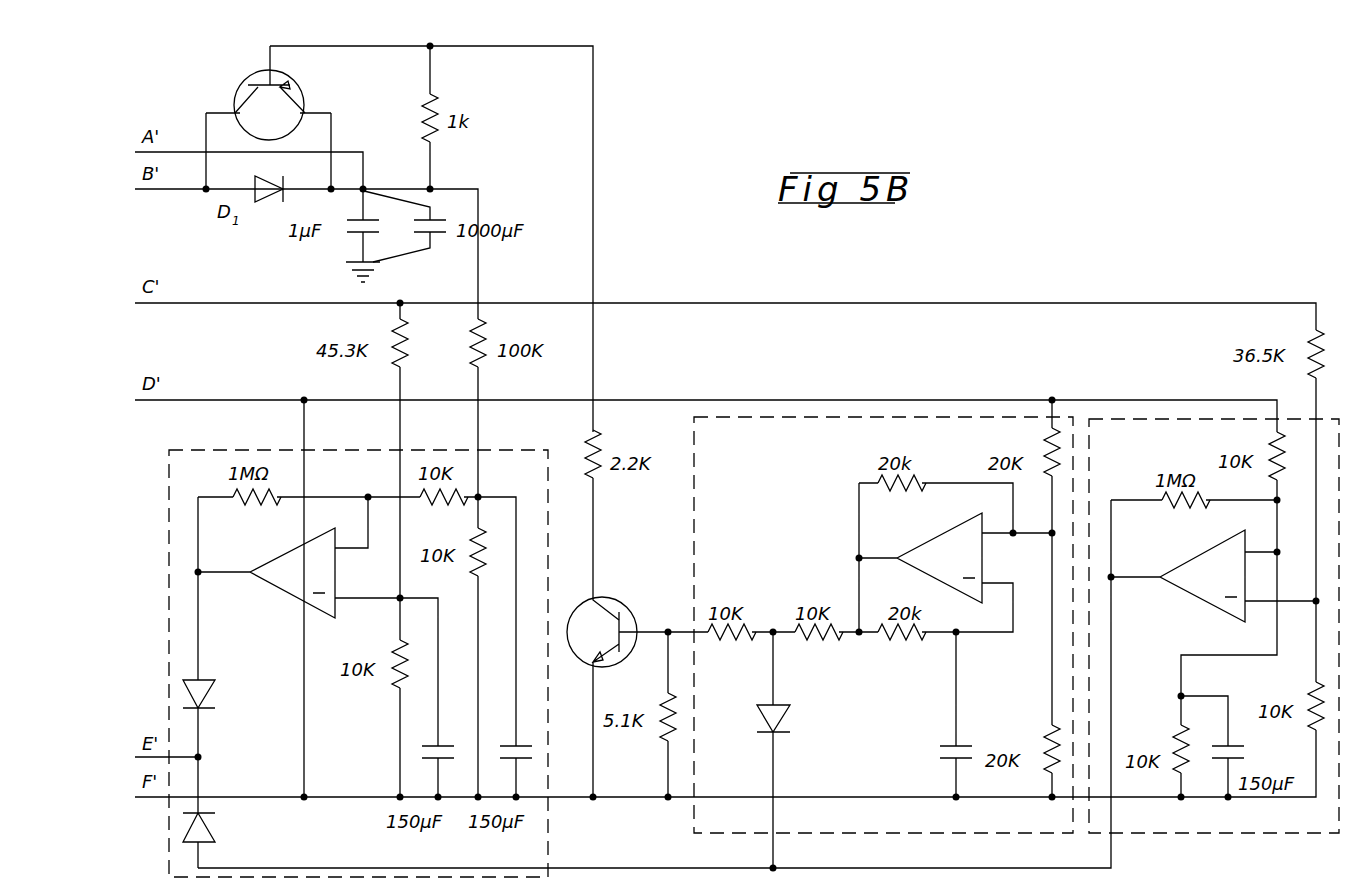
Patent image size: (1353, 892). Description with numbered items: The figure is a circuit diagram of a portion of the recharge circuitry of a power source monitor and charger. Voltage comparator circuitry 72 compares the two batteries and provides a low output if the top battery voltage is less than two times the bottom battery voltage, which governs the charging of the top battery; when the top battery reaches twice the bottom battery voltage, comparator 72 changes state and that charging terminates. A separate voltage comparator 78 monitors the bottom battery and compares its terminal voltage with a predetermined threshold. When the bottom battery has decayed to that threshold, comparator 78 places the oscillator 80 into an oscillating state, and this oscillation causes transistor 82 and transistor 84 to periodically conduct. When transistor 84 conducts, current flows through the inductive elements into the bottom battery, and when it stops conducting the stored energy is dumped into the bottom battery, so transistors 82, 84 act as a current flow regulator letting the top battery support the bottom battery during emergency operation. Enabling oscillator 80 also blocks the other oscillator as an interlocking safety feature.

The transistor 84 is at (228, 73).
The transistor 82 is at (638, 586).
The voltage comparator circuitry 72 is at (169, 538).
The oscillator 80 is at (694, 824).
The voltage comparator 78 is at (1196, 835).